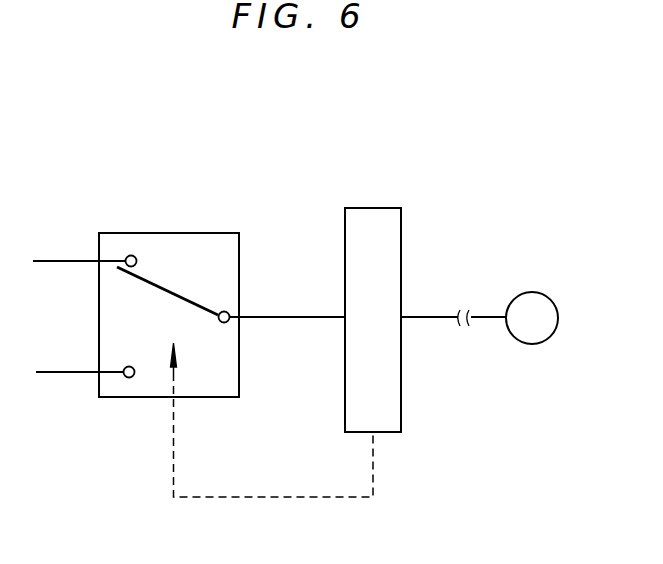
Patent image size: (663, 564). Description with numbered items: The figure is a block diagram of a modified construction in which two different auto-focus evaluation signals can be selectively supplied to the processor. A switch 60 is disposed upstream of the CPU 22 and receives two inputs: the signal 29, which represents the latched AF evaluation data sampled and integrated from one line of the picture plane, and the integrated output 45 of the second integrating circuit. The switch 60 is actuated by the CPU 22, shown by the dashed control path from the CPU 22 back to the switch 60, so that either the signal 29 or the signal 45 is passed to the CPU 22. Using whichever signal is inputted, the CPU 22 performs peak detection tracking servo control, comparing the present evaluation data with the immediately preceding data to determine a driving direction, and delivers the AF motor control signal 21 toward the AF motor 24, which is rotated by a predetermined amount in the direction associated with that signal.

The switch 60 is at (228, 232).
The signal 29 is at (131, 255).
The integrated output 45 is at (129, 380).
The CPU 22 is at (401, 218).
The AF motor control signal 21 is at (439, 322).
The AF motor 24 is at (558, 322).